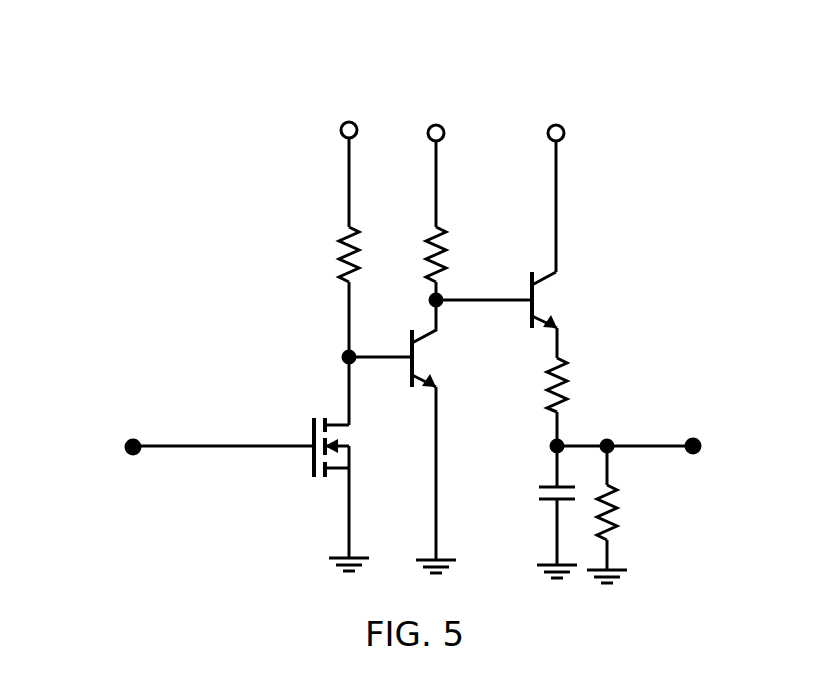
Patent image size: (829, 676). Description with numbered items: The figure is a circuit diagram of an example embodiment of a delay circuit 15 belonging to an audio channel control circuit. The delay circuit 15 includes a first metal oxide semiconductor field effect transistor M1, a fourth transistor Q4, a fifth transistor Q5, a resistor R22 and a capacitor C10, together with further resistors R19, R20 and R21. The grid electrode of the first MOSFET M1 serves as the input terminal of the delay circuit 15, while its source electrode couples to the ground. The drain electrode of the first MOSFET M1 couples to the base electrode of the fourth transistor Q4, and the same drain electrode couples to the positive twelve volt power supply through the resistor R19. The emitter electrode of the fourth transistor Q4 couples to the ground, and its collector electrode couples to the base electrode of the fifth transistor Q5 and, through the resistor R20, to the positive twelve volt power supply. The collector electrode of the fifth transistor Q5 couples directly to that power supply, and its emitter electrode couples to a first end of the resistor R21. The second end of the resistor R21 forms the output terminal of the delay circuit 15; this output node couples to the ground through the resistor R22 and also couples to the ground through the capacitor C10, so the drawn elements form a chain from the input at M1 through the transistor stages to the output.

The delay circuit 15 is at (452, 42).
The resistor R19 is at (320, 254).
The resistor R20 is at (462, 254).
The resistor R21 is at (583, 385).
The resistor R22 is at (635, 508).
The fourth transistor Q4 is at (444, 430).
The fifth transistor Q5 is at (562, 315).
The first metal oxide semiconductor field effect transistor M1 is at (356, 488).
The capacitor C10 is at (531, 524).